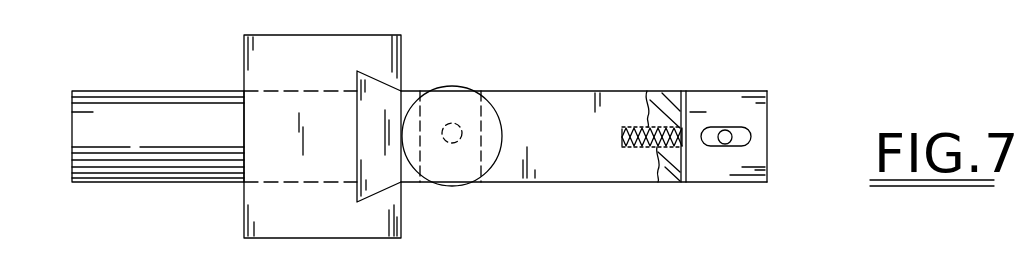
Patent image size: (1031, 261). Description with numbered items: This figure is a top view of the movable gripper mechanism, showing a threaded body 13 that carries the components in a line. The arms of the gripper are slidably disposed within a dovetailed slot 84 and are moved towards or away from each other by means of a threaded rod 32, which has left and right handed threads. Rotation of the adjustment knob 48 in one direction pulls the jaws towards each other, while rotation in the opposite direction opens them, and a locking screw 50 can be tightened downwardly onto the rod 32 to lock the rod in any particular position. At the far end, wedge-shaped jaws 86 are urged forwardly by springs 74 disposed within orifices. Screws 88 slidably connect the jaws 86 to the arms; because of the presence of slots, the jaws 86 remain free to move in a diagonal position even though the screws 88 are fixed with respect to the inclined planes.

The threaded body 13 is at (176, 91).
The dovetailed slot 84 is at (378, 73).
The adjustment knob 48 is at (462, 95).
The locking screw 50 is at (452, 186).
The threaded rod 32 is at (458, 147).
The springs 74 is at (641, 122).
The screws 88 is at (745, 137).
The wedge-shaped jaws 86 is at (710, 173).